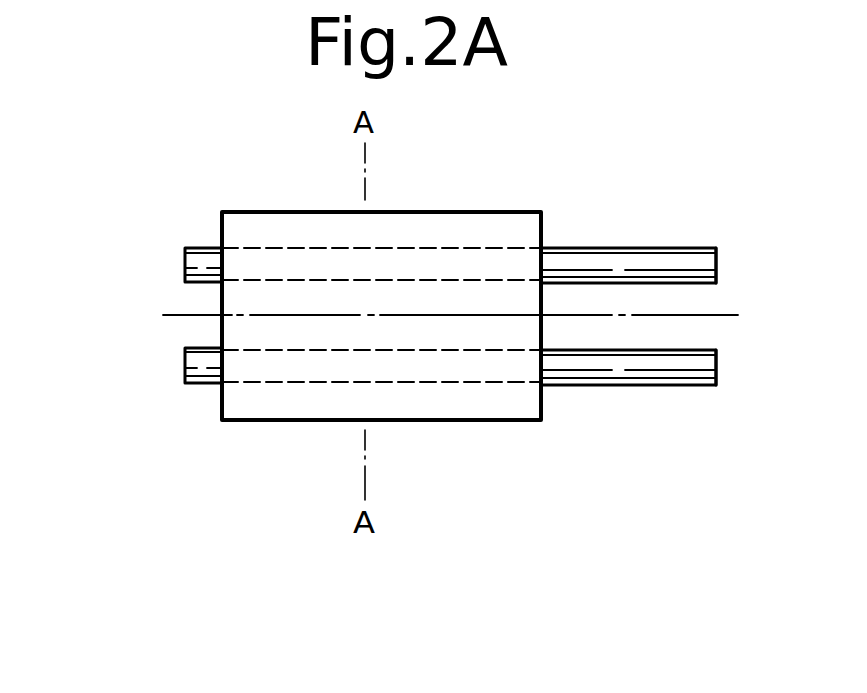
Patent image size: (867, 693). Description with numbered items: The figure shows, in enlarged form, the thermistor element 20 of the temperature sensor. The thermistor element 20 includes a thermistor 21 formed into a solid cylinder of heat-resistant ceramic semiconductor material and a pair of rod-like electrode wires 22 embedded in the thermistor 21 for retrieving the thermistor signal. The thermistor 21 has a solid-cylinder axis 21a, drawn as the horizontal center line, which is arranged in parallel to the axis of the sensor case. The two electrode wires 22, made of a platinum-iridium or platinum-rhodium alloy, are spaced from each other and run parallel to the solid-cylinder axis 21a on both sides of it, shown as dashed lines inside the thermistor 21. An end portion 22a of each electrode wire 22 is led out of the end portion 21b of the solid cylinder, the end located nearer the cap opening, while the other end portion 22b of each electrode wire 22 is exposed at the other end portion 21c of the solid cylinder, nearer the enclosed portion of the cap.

The thermistor element 20 is at (284, 189).
The thermistor 21 is at (475, 212).
The solid-cylinder axis 21a is at (185, 315).
The end portion of the solid cylinder 21b is at (543, 402).
The other end portion of the solid cylinder 21c is at (222, 402).
The electrode wire 22 is at (612, 248).
The end portion of electrode wire 22a is at (717, 261).
The other end portion of electrode wire 22b is at (185, 261).